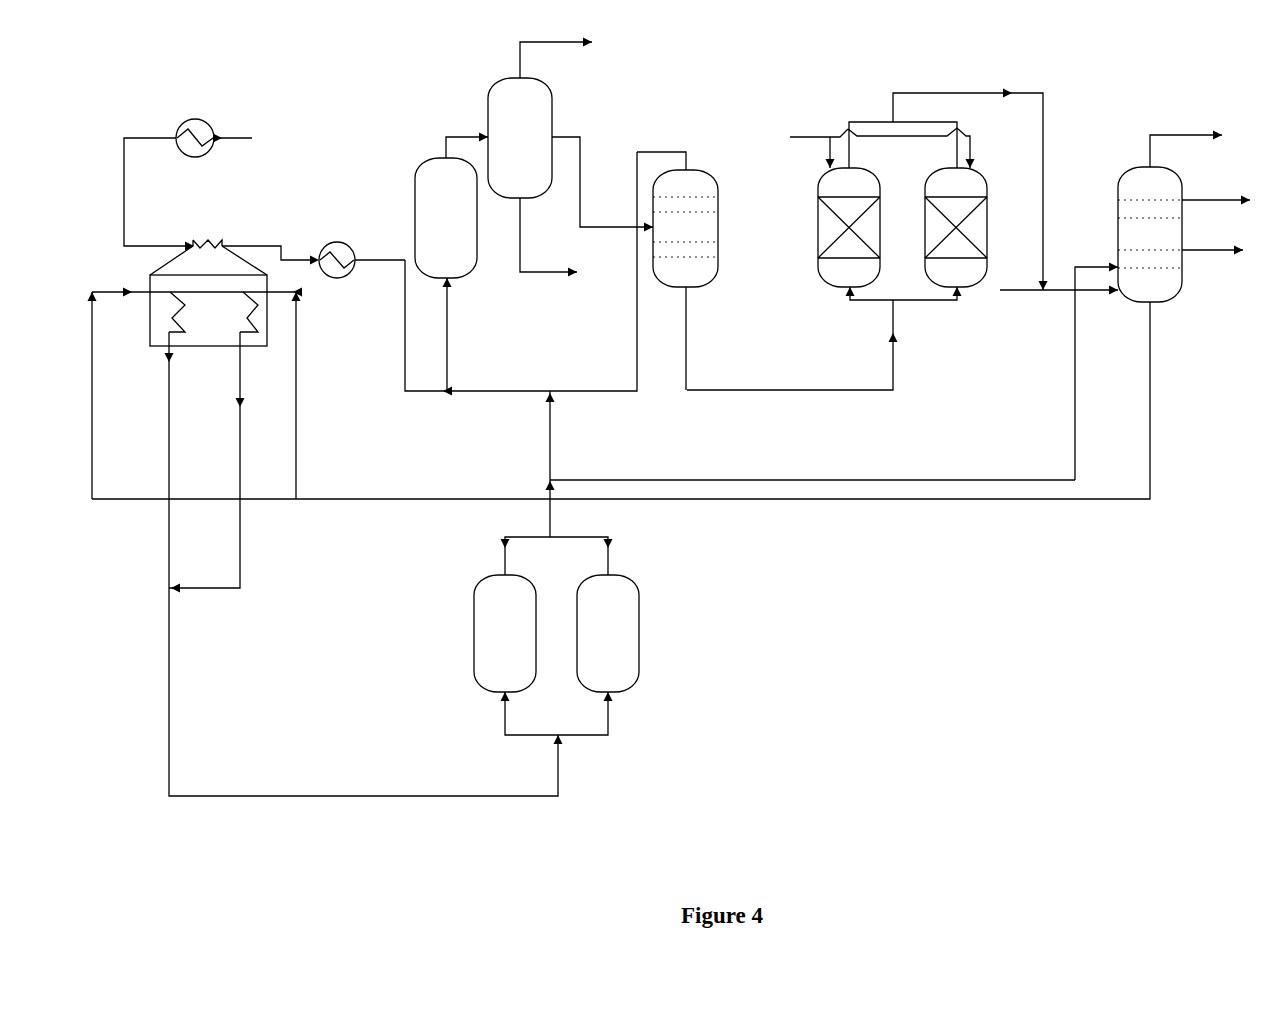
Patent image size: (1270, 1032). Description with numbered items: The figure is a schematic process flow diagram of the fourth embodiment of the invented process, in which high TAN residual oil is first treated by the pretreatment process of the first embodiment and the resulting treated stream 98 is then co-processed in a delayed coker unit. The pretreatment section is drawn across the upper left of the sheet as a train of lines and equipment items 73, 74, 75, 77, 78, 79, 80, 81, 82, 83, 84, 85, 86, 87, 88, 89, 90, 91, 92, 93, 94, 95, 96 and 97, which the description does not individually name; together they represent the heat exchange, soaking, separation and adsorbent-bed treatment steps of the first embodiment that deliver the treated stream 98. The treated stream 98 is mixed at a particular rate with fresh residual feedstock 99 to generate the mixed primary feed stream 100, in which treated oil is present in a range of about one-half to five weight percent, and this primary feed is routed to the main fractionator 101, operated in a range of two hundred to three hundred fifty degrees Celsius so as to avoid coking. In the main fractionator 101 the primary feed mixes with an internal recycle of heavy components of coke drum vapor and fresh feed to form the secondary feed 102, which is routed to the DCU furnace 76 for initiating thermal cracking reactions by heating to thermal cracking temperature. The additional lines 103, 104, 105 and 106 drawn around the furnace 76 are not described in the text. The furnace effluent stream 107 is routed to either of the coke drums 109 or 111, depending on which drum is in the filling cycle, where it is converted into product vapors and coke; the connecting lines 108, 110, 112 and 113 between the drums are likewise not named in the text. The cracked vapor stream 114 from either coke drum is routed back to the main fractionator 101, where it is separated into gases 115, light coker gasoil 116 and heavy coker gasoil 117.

The outlet line 73 is at (252, 137).
The heat exchanger 74 is at (188, 119).
The line 75 is at (124, 192).
The DCU furnace 76 is at (150, 276).
The line 77 is at (262, 246).
The heat exchanger 78 is at (336, 242).
The line 79 is at (415, 392).
The line 80 is at (447, 290).
The vessel 81 is at (417, 185).
The line 82 is at (461, 136).
The separator 83 is at (503, 78).
The outlet line 84 is at (566, 42).
The outlet line 85 is at (553, 274).
The line 86 is at (624, 227).
The column 87 is at (704, 288).
The line 88 is at (610, 392).
The line 89 is at (551, 423).
The line 90 is at (806, 391).
The line 91 is at (852, 301).
The reactor 92 is at (818, 195).
The line 93 is at (960, 301).
The reactor 94 is at (988, 188).
The feed line 95 is at (822, 137).
The line 96 is at (866, 122).
The line 97 is at (949, 128).
The treated stream 98 is at (977, 93).
The fresh residual feedstock 99 is at (1013, 291).
The mixed primary feed stream 100 is at (1088, 292).
The main fractionator 101 is at (1119, 222).
The secondary feed 102 is at (910, 500).
The line 103 is at (94, 385).
The line 104 is at (297, 338).
The line 105 is at (169, 540).
The line 106 is at (242, 556).
The furnace effluent stream 107 is at (169, 718).
The line 108 is at (505, 720).
The coke drum 109 is at (474, 675).
The line 110 is at (610, 720).
The coke drum 111 is at (641, 646).
The line 112 is at (504, 555).
The line 113 is at (612, 540).
The cracked vapor stream 114 is at (985, 480).
The gases 115 is at (1195, 137).
The light coker gasoil 116 is at (1205, 201).
The heavy coker gasoil 117 is at (1216, 251).